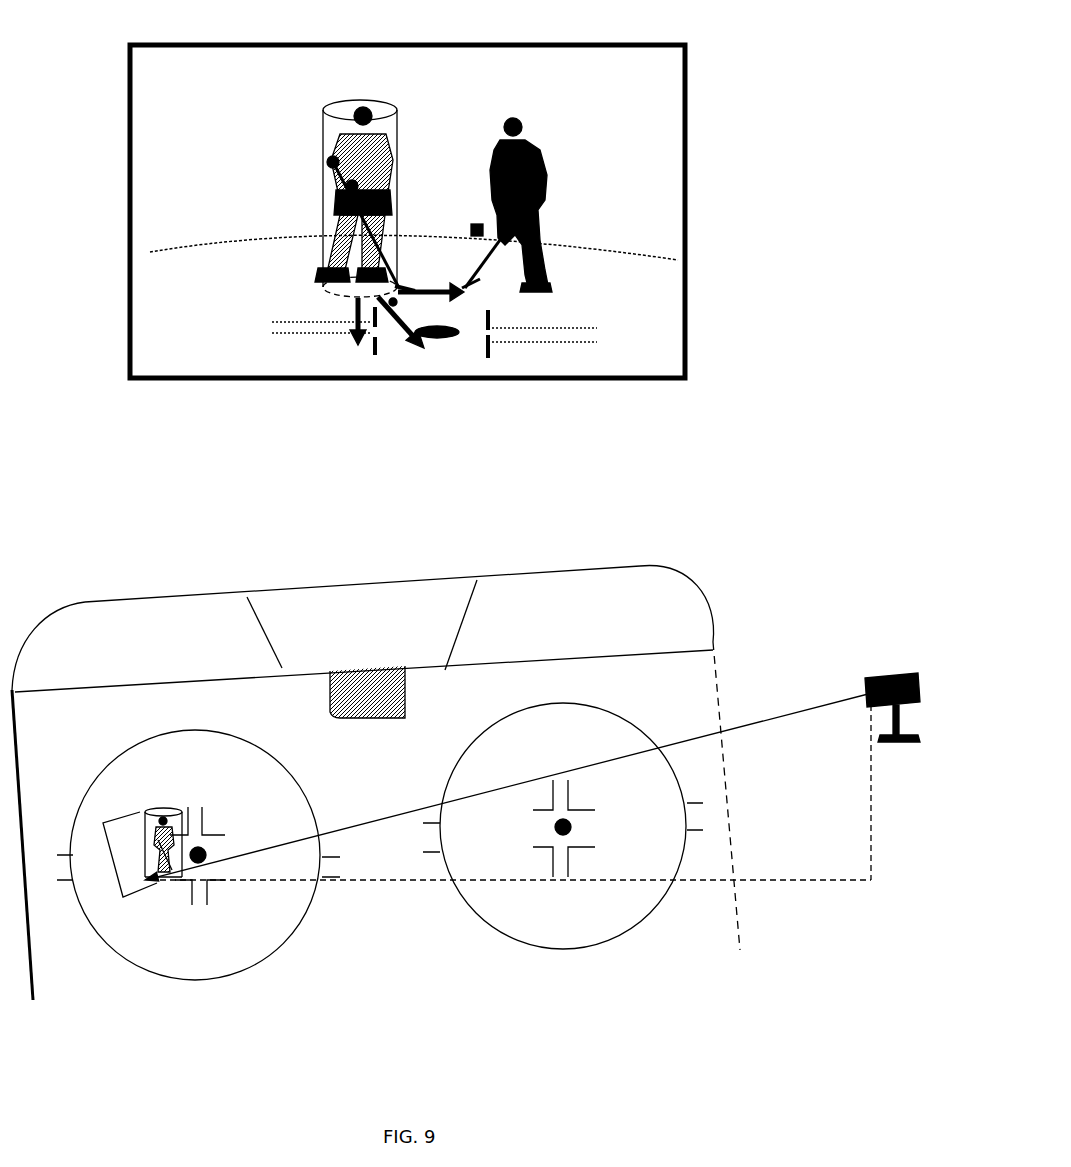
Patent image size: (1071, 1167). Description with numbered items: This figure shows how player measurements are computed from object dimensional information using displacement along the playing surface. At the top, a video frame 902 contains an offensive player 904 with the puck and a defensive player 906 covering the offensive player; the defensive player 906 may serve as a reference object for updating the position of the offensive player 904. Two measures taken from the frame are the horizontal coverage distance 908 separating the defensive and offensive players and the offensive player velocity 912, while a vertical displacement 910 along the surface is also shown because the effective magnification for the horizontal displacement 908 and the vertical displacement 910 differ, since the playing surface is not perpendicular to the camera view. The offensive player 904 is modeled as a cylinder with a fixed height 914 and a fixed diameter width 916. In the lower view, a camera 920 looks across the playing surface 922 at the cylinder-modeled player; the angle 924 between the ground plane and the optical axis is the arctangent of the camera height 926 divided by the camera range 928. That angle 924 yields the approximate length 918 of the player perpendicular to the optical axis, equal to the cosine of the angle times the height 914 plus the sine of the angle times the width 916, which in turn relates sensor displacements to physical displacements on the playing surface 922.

The video frame 902 is at (209, 150).
The offensive player 904 is at (360, 87).
The defensive player 906 is at (523, 88).
The horizontal coverage distance 908 is at (140, 408).
The vertical displacement 910 is at (358, 358).
The offensive player velocity 912 is at (427, 360).
The height 914 is at (141, 795).
The diameter width 916 is at (330, 320).
The length 918 is at (107, 895).
The camera 920 is at (878, 671).
The playing surface 922 is at (376, 783).
The angle 924 is at (227, 871).
The camera height 926 is at (826, 792).
The camera range 928 is at (510, 898).